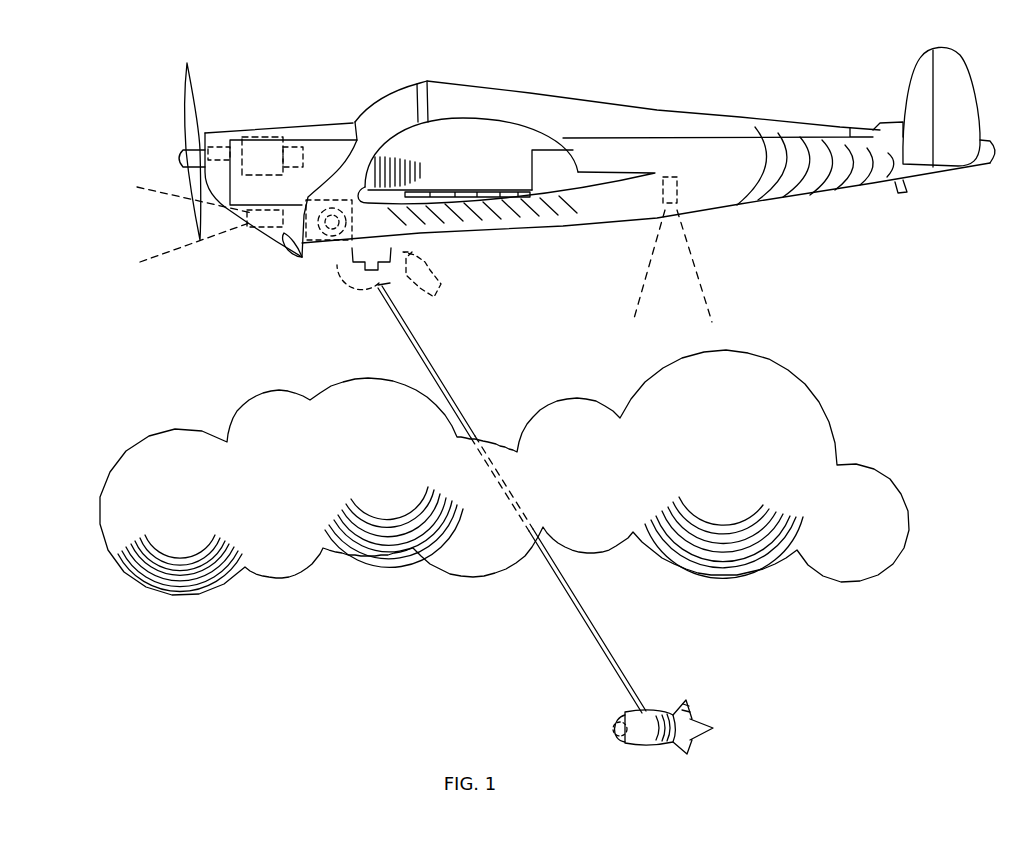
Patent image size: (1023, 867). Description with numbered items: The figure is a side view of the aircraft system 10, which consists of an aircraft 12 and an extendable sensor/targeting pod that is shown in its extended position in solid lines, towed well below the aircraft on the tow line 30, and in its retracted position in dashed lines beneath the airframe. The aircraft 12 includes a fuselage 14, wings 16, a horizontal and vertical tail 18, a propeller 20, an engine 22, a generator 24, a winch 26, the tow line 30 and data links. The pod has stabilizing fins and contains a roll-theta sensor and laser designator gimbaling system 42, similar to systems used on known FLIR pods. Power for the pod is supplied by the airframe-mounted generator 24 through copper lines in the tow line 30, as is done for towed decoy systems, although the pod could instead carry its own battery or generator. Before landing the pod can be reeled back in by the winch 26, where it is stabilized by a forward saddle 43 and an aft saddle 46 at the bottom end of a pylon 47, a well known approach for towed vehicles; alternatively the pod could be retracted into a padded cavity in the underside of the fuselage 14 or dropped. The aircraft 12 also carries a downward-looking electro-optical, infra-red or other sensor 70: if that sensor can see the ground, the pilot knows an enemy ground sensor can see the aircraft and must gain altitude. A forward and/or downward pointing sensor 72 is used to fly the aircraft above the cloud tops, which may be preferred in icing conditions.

The aircraft system 10 is at (176, 322).
The aircraft 12 is at (632, 61).
The fuselage 14 is at (683, 111).
The wings 16 is at (617, 213).
The horizontal and vertical tail 18 is at (912, 105).
The propeller 20 is at (185, 110).
The engine 22 is at (277, 146).
The generator 24 is at (304, 146).
The winch 26 is at (340, 232).
The tow line 30 is at (515, 506).
The roll-theta sensor and laser designator gimbaling system 42 is at (617, 720).
The forward saddle 43 is at (350, 273).
The aft saddle 46 is at (392, 272).
The pylon 47 is at (353, 255).
The sensor 70 is at (678, 190).
The forward and/or downward pointing sensor 72 is at (263, 226).